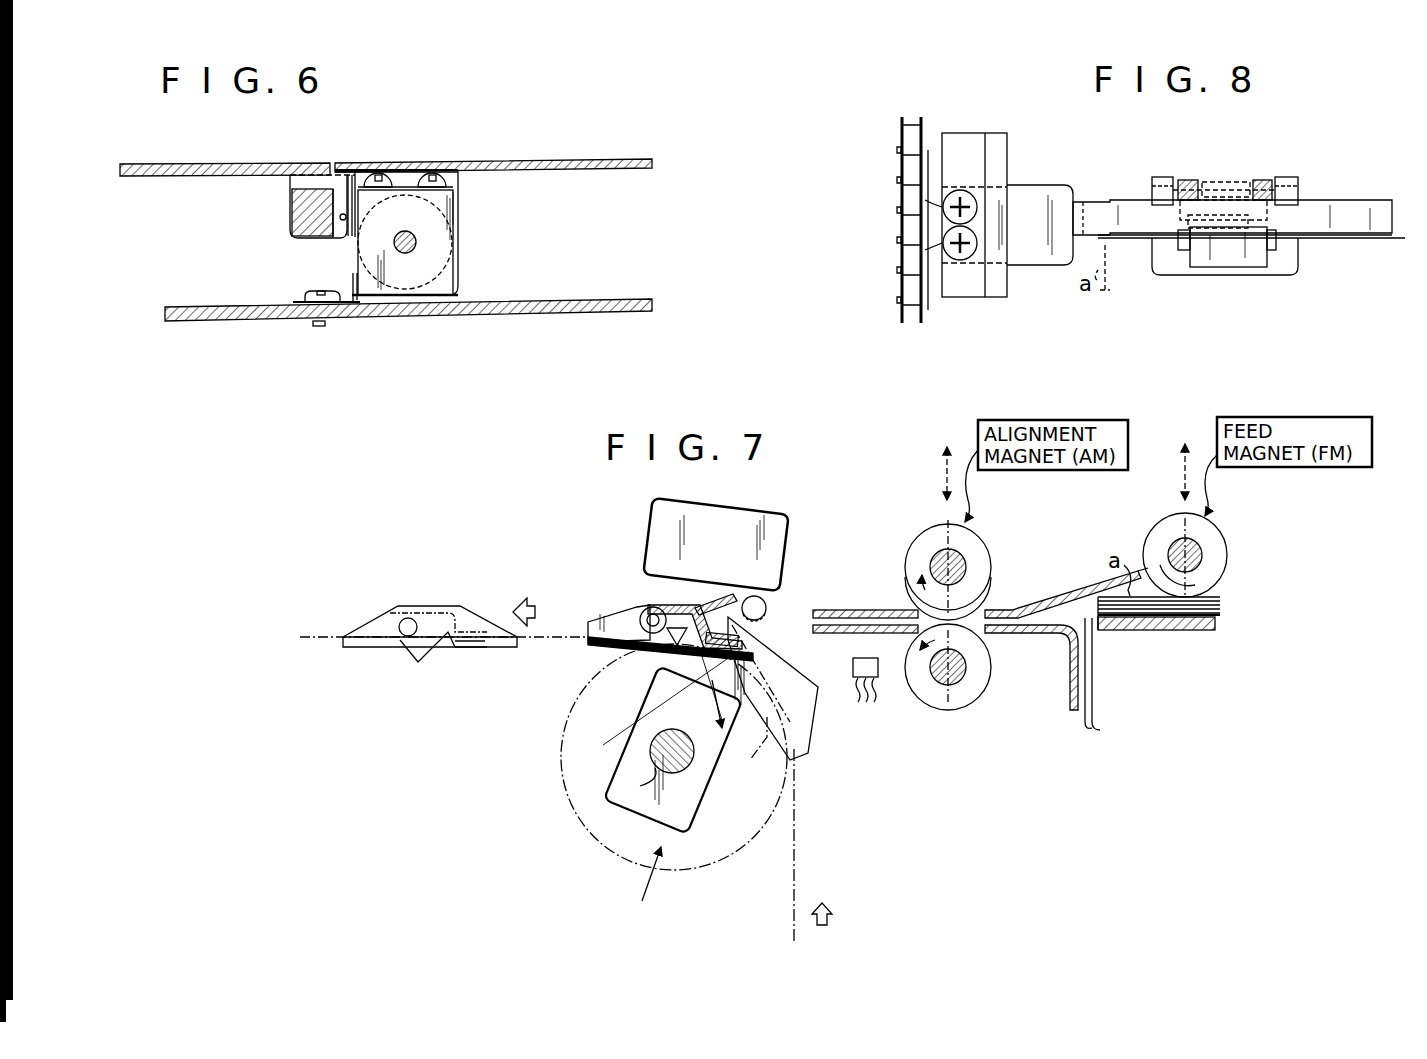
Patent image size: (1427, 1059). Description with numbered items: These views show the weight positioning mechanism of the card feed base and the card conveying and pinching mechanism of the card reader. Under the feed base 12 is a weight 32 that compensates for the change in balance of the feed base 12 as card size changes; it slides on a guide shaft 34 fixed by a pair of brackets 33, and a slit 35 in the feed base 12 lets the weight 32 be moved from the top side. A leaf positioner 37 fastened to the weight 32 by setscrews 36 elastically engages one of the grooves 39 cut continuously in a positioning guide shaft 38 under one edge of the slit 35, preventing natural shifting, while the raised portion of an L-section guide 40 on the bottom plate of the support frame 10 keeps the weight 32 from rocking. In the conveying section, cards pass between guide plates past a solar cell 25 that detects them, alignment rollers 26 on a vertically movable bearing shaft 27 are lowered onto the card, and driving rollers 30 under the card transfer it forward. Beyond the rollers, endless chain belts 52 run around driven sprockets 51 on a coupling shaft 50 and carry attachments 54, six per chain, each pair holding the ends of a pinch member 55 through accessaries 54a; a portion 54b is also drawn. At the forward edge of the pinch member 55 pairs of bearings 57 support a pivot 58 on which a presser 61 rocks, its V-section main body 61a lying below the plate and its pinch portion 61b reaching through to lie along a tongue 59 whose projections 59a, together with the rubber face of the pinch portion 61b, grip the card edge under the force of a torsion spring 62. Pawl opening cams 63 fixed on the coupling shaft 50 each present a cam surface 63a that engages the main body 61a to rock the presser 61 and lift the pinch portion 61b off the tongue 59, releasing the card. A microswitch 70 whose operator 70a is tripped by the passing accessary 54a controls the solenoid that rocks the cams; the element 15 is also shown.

In FIG. 6, the support frame 10 is at (590, 310).
In FIG. 6, the feed base 12 is at (543, 159).
In FIG. 7, the feed base 12 is at (1140, 630).
In FIG. 6, the weight 32 is at (447, 256).
In FIG. 6, the brackets 33 is at (460, 216).
In FIG. 6, the guide shaft 34 is at (407, 253).
In FIG. 6, the slit 35 is at (438, 170).
In FIG. 6, the setscrews 36 is at (386, 180).
In FIG. 6, the positioner 37 is at (406, 189).
In FIG. 6, the positioning guide shaft 38 is at (290, 217).
In FIG. 6, the grooves 39 is at (318, 237).
In FIG. 6, the guide 40 is at (346, 303).
In FIG. 8, the endless chain belt 52 is at (898, 133).
In FIG. 7, the endless chain belt 52 is at (318, 637).
In FIG. 8, the attachments 54 is at (945, 207).
In FIG. 7, the attachments 54 is at (606, 620).
In FIG. 8, the accessary 54a is at (965, 290).
In FIG. 8, the boss portion of bracket 54b is at (1003, 156).
In FIG. 8, the pinch member 55 is at (1340, 210).
In FIG. 8, the bearings 57 is at (1162, 177).
In FIG. 8, the pivot 58 is at (1226, 182).
In FIG. 7, the pivot 58 is at (650, 607).
In FIG. 8, the tongue 59 is at (1290, 270).
In FIG. 7, the projections 59a is at (755, 657).
In FIG. 7, the presser 61 is at (655, 650).
In FIG. 7, the main body 61a is at (714, 647).
In FIG. 8, the pinch portion 61b is at (1232, 265).
In FIG. 7, the pinch portion 61b is at (718, 604).
In FIG. 8, the torsion spring 62 is at (1188, 180).
In FIG. 7, the pawl opening cam 63 is at (640, 705).
In FIG. 7, the cam surface 63a is at (672, 729).
In FIG. 7, the coupling shaft 50 is at (636, 785).
In FIG. 7, the driven sprockets 51 is at (563, 735).
In FIG. 7, the bearing shaft 27 is at (641, 887).
In FIG. 7, the alignment rollers 26 is at (985, 545).
In FIG. 7, the driving rollers 30 is at (984, 690).
In FIG. 7, the feed roller 15 is at (1163, 532).
In FIG. 7, the solar cell 25 is at (877, 686).
In FIG. 7, the microswitch 70 is at (733, 503).
In FIG. 7, the operator 70a is at (767, 610).